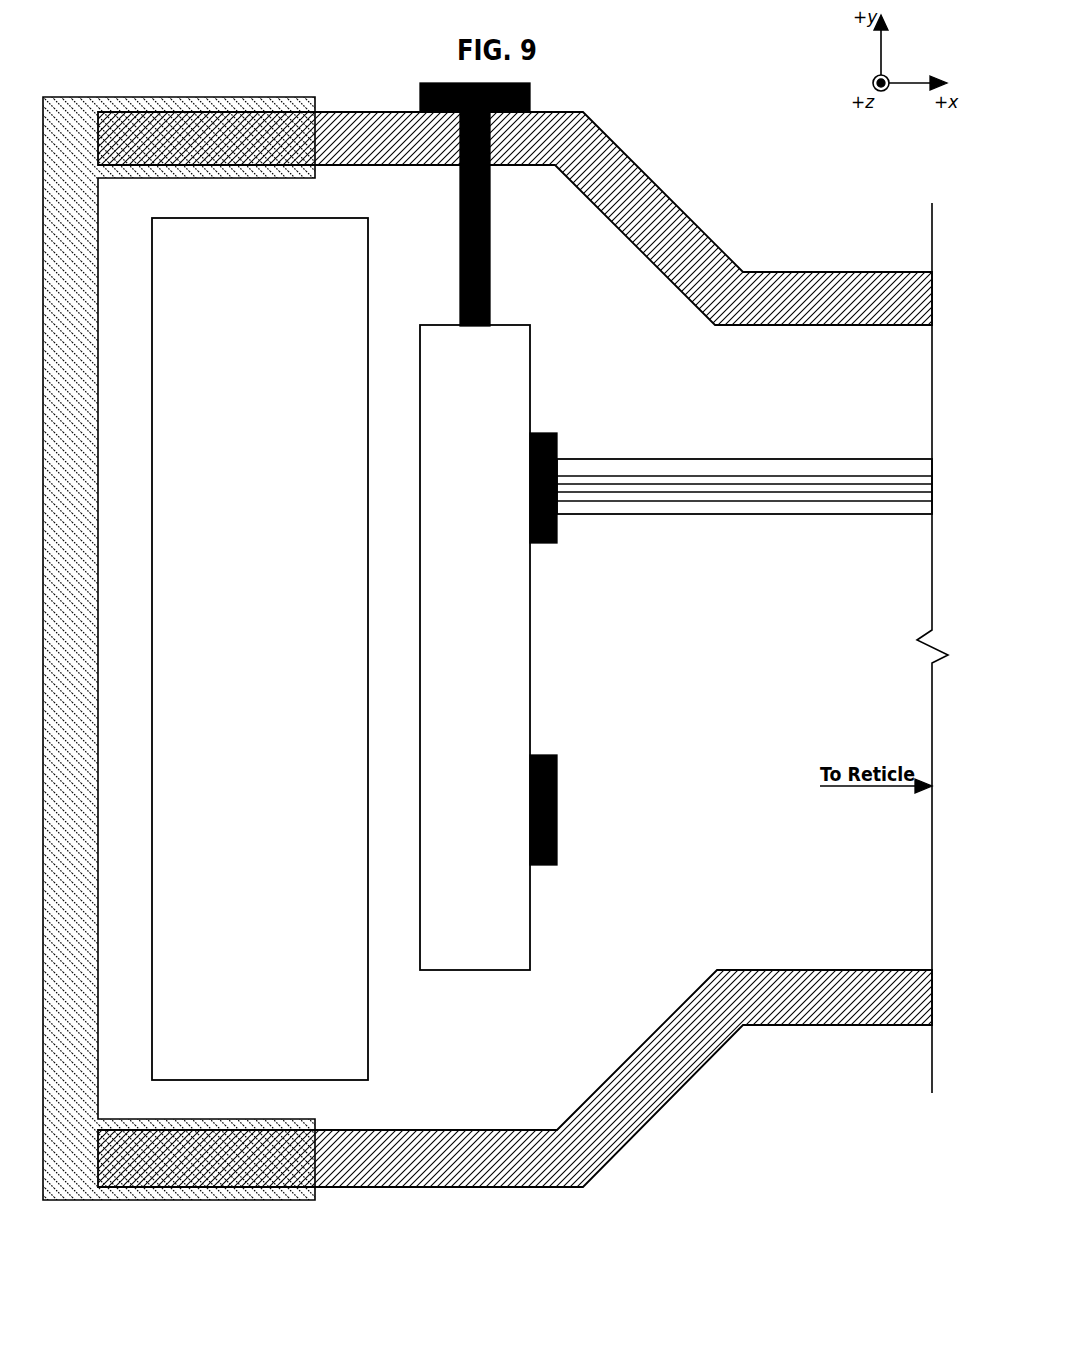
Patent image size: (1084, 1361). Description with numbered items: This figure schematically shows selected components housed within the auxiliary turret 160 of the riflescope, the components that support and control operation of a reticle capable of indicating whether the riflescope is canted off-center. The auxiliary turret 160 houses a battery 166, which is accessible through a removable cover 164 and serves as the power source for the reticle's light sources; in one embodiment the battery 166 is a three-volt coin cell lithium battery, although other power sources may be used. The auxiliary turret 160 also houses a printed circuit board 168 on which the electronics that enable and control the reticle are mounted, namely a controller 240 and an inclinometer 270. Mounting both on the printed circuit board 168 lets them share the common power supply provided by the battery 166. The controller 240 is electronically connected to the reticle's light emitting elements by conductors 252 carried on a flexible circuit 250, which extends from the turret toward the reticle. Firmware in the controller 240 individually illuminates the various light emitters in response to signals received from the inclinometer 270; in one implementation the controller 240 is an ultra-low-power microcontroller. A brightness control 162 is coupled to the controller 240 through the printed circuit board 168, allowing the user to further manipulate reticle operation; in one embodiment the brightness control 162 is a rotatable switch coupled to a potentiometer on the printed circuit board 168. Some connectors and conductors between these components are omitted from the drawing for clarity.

The auxiliary turret 160 is at (493, 1187).
The brightness control 162 is at (668, 67).
The removable cover 164 is at (188, 1200).
The battery 166 is at (260, 649).
The printed circuit board 168 is at (475, 647).
The controller 240 is at (550, 543).
The flexible circuit 250 is at (710, 515).
The conductors 252 is at (685, 420).
The inclinometer 270 is at (553, 865).